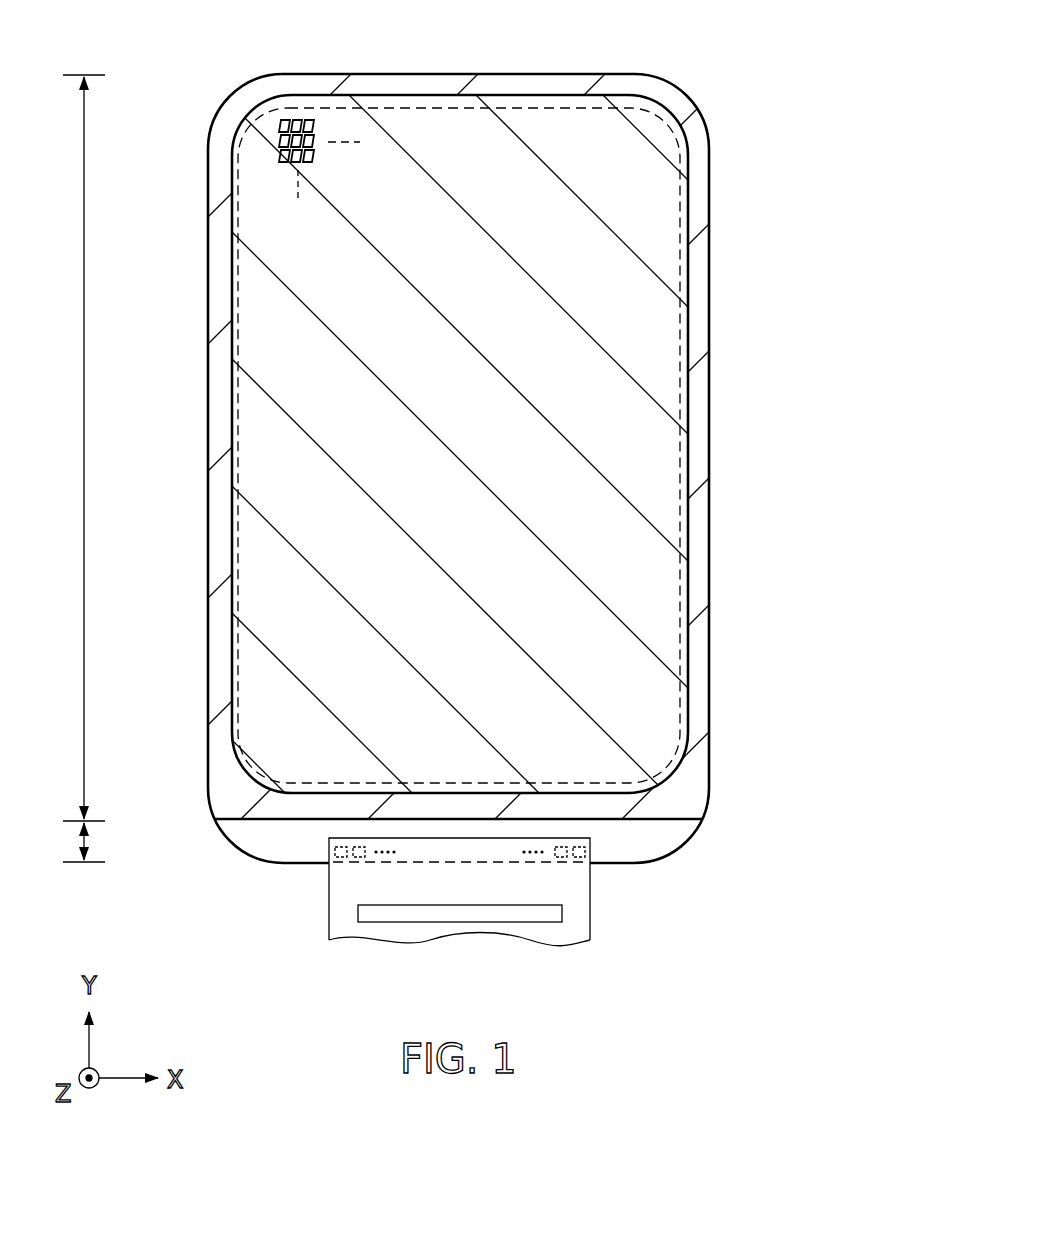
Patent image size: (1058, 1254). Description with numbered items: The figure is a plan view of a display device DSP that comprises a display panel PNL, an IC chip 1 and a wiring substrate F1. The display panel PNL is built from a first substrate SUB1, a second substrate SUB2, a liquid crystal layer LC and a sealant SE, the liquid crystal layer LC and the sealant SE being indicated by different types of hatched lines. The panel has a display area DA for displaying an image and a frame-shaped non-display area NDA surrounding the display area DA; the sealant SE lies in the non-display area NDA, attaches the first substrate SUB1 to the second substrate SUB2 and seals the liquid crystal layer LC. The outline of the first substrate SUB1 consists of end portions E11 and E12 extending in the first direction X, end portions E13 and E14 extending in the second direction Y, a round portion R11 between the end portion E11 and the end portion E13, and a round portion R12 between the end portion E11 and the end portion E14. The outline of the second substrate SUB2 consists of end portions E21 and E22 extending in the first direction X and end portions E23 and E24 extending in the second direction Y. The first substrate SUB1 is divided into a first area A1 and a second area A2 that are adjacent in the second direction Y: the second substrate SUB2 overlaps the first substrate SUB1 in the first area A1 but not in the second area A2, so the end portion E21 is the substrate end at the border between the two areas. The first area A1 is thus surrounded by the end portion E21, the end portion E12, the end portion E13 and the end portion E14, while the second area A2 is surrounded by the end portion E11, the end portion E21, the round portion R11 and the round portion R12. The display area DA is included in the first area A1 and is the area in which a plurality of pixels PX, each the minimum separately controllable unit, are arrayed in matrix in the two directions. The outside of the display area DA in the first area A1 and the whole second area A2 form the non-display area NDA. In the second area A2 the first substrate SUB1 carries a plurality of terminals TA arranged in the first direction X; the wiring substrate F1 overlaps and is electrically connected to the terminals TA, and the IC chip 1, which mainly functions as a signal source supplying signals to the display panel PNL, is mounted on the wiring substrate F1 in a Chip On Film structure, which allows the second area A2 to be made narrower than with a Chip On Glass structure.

The display device DSP is at (832, 103).
The display panel PNL is at (737, 516).
The first substrate SUB1 is at (684, 828).
The second substrate SUB2 is at (703, 757).
The display area DA is at (660, 178).
The non-display area NDA is at (700, 205).
The liquid crystal layer LC is at (660, 268).
The sealant SE is at (698, 313).
The pixel PX is at (282, 156).
The end portion E11 is at (623, 868).
The end portion E12 is at (458, 37).
The end portion E13 is at (159, 468).
The end portion E14 is at (792, 468).
The end portion E21 is at (668, 826).
The end portion E22 is at (462, 70).
The end portion E23 is at (206, 383).
The end portion E24 is at (718, 387).
The round portion R11 is at (226, 839).
The round portion R12 is at (665, 866).
The wiring substrate F1 is at (580, 922).
The IC chip 1 is at (535, 915).
The terminals TA is at (355, 862).
The first area A1 is at (75, 448).
The second area A2 is at (76, 842).